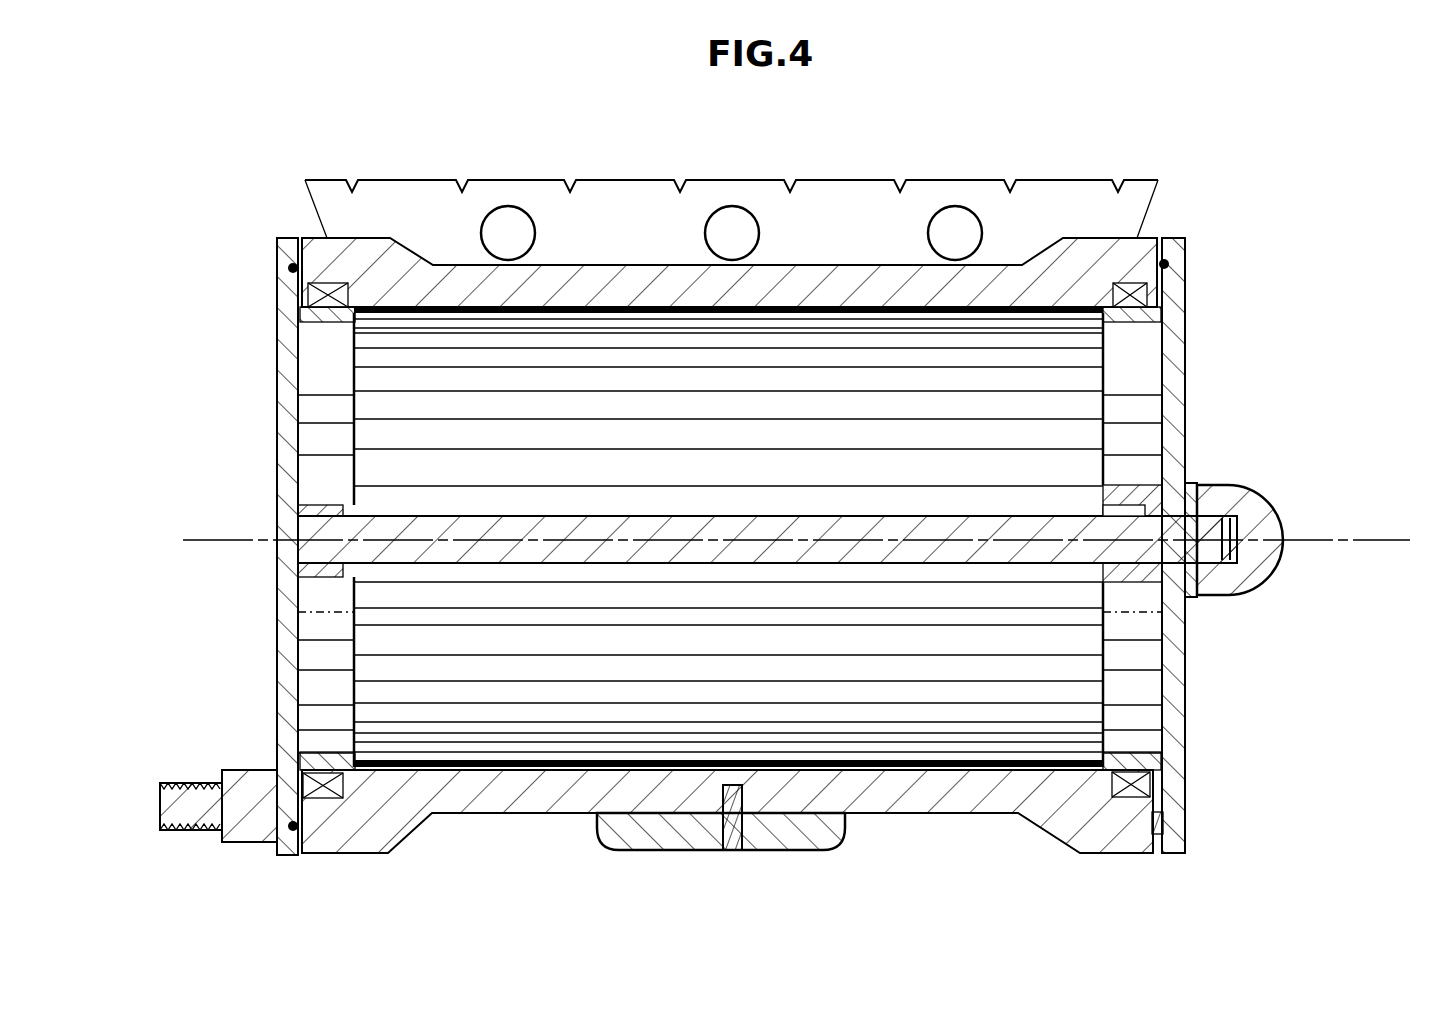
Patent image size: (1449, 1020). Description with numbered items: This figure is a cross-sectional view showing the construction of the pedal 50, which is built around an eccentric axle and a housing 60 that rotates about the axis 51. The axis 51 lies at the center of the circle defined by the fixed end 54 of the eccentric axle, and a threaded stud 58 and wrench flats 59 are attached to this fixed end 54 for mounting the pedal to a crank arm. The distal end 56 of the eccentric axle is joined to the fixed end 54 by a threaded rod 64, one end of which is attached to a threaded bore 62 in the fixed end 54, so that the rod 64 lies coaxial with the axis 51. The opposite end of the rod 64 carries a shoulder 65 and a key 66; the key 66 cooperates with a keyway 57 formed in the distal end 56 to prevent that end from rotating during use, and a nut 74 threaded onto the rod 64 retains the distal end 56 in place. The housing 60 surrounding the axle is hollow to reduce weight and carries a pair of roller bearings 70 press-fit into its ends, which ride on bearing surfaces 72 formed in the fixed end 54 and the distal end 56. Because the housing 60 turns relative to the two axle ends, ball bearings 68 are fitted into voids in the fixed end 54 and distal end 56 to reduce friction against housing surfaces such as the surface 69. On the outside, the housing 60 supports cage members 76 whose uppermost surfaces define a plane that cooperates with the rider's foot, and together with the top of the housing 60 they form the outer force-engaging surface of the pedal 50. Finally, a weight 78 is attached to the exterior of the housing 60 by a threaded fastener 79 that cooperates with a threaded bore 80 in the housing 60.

The pedal 50 is at (1372, 172).
The axis 51 is at (1358, 542).
The fixed end 54 is at (277, 606).
The distal end 56 is at (1185, 680).
The keyway 57 is at (1192, 485).
The threaded stud 58 is at (160, 807).
The wrench flats 59 is at (250, 842).
The housing 60 is at (522, 815).
The threaded bore 62 is at (328, 505).
The rod 64 is at (713, 564).
The shoulder 65 is at (1100, 510).
The key 66 is at (1136, 505).
The ball bearings 68 is at (1165, 822).
The housing surface 69 is at (1135, 853).
The roller bearings 70 is at (322, 295).
The bearing surfaces 72 is at (312, 318).
The nut 74 is at (1265, 503).
The cage members 76 is at (753, 180).
The weight 78 is at (825, 850).
The threaded fastener 79 is at (735, 852).
The threaded bore 80 is at (744, 797).